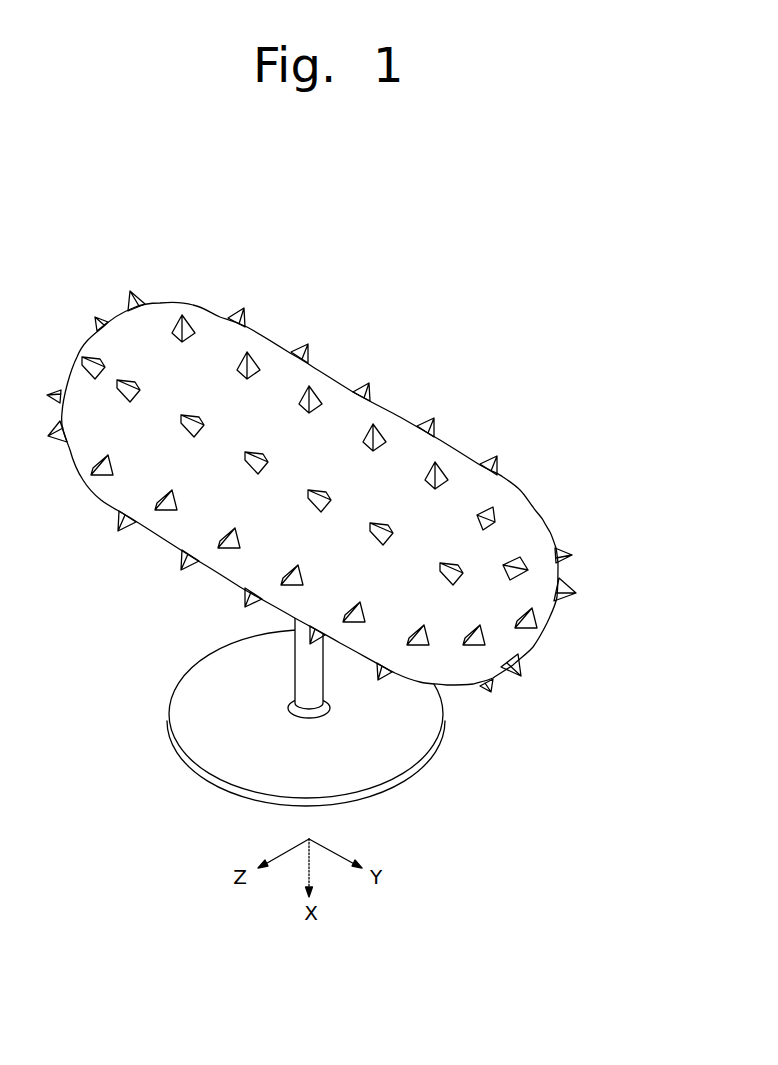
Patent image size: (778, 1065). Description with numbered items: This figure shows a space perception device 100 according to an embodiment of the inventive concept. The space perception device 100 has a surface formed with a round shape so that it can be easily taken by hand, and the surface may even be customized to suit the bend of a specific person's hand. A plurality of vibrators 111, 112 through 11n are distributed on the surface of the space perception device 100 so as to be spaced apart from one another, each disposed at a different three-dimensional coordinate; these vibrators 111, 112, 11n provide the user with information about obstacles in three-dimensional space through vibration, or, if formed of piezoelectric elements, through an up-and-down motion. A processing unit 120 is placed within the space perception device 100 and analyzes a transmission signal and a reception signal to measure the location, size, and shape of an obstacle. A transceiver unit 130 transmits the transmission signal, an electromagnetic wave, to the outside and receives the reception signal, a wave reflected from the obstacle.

The space perception device 100 is at (580, 266).
The vibrator 111 is at (497, 518).
The vibrator 112 is at (518, 559).
The vibrator 11n is at (577, 592).
The processing unit 120 is at (445, 654).
The transceiver unit 130 is at (366, 756).